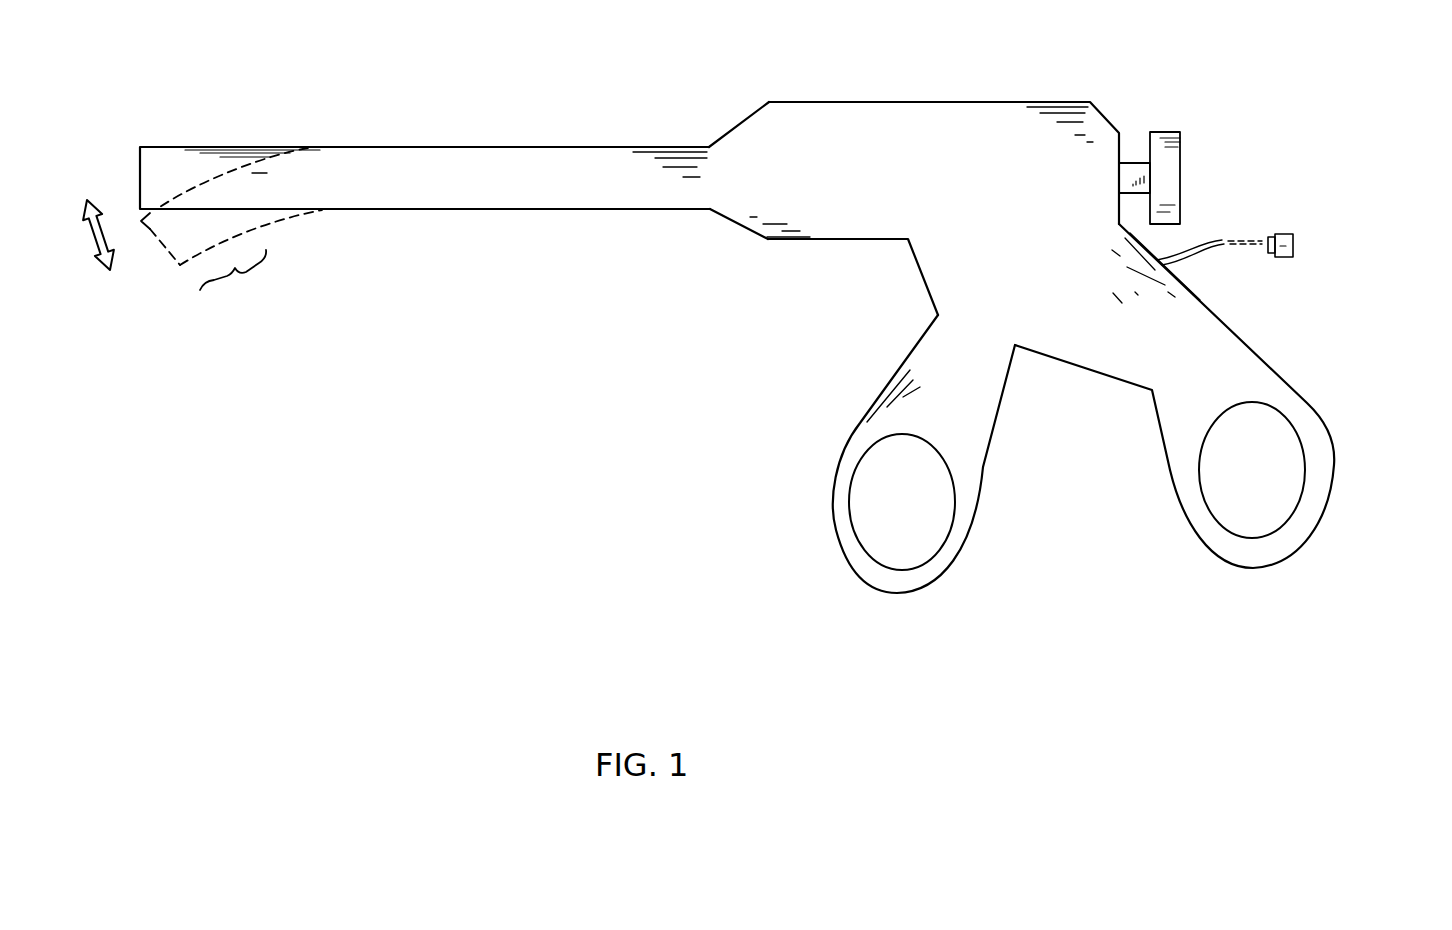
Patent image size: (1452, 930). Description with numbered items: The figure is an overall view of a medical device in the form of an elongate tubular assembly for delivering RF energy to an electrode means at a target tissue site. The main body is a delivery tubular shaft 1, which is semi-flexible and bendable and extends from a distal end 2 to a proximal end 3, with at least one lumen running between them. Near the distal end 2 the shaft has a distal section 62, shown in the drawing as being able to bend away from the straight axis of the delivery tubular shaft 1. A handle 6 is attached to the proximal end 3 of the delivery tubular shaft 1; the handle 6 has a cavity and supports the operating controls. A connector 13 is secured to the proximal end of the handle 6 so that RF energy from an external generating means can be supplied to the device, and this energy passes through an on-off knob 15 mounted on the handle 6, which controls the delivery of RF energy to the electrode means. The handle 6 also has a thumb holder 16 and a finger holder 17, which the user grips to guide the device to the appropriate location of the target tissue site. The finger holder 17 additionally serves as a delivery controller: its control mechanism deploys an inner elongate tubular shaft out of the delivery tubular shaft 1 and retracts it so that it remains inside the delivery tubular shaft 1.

The delivery tubular shaft 1 is at (572, 143).
The distal end 2 is at (147, 138).
The proximal end 3 is at (710, 140).
The handle 6 is at (1000, 97).
The connector 13 is at (1297, 232).
The on-off knob 15 is at (1185, 205).
The thumb holder 16 is at (1283, 495).
The finger holder 17 is at (932, 540).
The distal section 62 is at (233, 281).